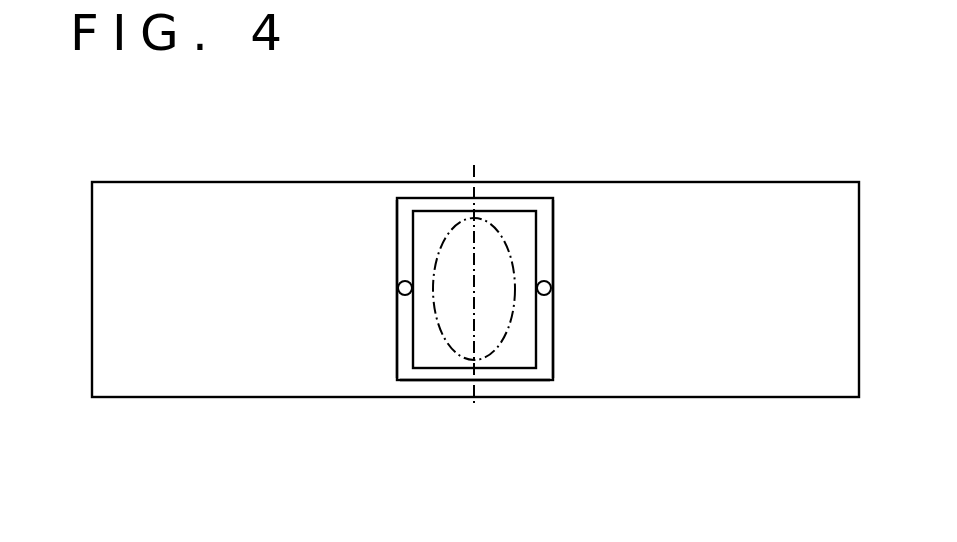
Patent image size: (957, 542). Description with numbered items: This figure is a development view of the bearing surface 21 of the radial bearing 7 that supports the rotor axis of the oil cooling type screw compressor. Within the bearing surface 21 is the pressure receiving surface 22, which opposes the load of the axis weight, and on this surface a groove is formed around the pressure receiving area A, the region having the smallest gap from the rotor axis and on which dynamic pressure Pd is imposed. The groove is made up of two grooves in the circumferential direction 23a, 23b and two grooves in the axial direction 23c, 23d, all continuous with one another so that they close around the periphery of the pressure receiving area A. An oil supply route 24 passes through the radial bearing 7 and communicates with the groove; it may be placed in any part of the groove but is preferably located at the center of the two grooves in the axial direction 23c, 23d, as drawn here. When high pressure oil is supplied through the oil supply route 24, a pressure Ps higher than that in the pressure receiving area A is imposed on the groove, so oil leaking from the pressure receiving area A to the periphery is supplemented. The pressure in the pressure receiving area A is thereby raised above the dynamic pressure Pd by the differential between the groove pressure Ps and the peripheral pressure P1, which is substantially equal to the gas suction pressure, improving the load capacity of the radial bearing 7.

The radial bearing 7 is at (171, 174).
The bearing surface 21 is at (748, 183).
The pressure receiving surface 22 is at (660, 200).
The groove in the circumferential direction 23a is at (516, 205).
The groove in the circumferential direction 23b is at (424, 381).
The groove in the axial direction 23c is at (395, 335).
The groove in the axial direction 23d is at (553, 333).
The oil supply route 24 is at (398, 277).
The pressure receiving area A is at (440, 232).
The peripheral pressure P1 is at (477, 290).
The dynamic pressure Pd is at (473, 288).
The pressure of the oil supplied to the groove Ps is at (397, 312).